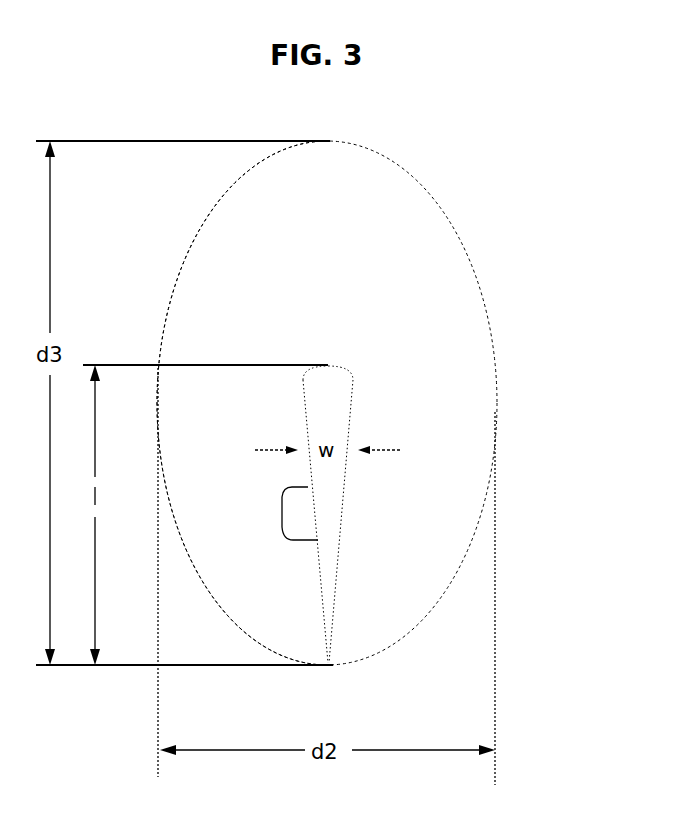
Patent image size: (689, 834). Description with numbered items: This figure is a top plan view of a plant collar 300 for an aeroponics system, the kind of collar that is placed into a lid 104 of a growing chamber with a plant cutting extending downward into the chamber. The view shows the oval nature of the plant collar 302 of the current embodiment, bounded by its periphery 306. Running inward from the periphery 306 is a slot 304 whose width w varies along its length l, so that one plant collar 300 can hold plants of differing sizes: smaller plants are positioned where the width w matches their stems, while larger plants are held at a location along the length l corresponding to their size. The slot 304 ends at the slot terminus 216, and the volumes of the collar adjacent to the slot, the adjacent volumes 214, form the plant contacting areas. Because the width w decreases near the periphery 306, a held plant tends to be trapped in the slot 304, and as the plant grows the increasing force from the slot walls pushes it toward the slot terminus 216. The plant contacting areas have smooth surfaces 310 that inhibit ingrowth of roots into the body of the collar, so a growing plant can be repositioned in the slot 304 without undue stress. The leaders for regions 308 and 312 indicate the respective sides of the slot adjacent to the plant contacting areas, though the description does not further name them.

The plant collar 300 is at (460, 128).
The plant collar 302 is at (463, 250).
The lid 104 is at (167, 310).
The slot terminus 216 is at (330, 365).
The beam region 308 is at (340, 414).
The smooth surfaces 310 is at (312, 512).
The second edge of beam 312 is at (327, 537).
The adjacent volumes 214 is at (292, 541).
The slot 304 is at (328, 686).
The periphery 306 is at (228, 620).